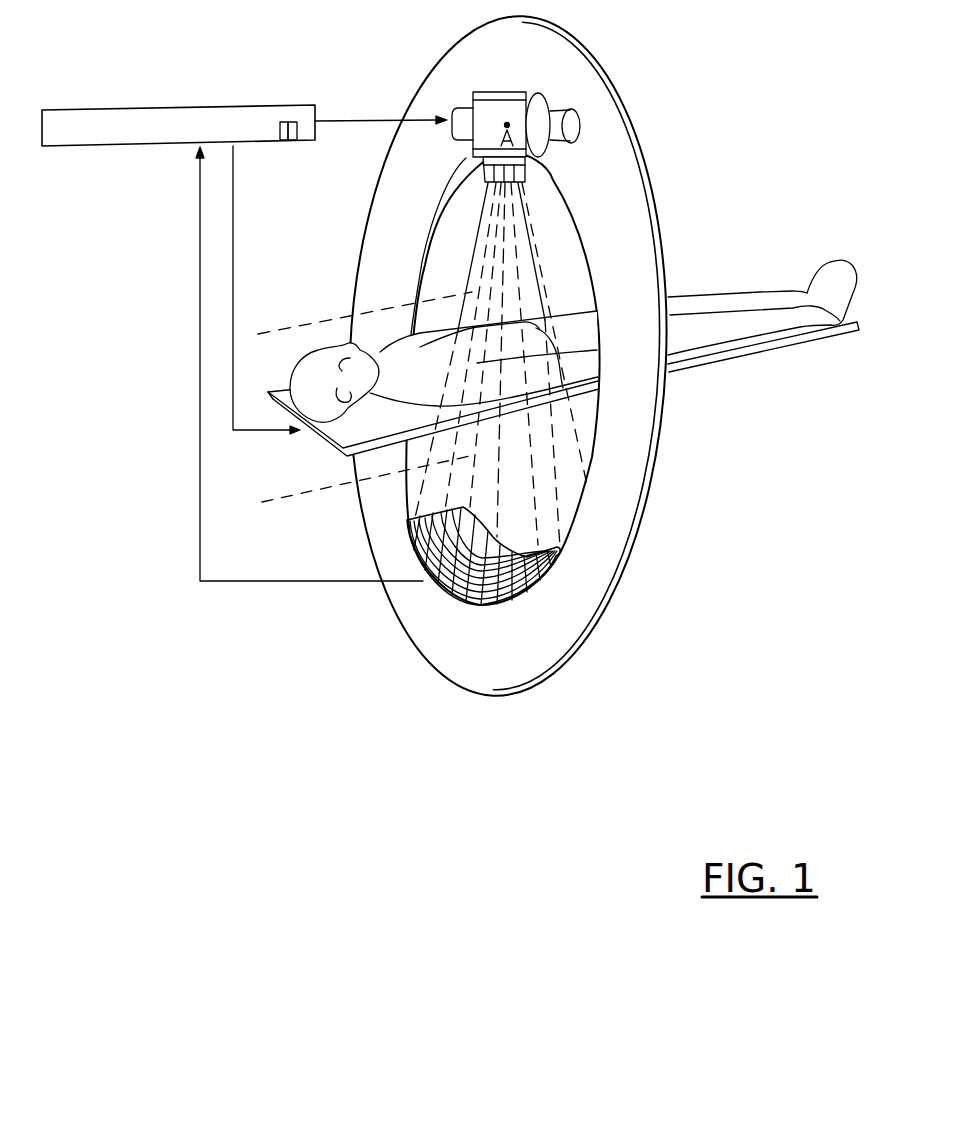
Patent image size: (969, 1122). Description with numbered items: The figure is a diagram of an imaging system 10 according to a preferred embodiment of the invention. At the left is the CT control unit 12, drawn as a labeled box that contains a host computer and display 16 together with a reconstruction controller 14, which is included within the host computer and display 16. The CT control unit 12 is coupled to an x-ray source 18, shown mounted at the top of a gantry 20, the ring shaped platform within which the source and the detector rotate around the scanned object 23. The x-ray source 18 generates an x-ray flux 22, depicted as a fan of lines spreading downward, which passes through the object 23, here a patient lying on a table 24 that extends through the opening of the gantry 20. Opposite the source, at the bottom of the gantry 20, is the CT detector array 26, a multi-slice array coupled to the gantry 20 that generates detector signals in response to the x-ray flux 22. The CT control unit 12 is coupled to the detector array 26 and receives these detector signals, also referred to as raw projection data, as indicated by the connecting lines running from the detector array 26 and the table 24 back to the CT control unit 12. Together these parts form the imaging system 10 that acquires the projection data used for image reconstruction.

The imaging system 10 is at (712, 73).
The CT control unit 12 is at (247, 107).
The reconstruction controller 14 is at (283, 140).
The host computer and display 16 is at (293, 140).
The x-ray source 18 is at (493, 92).
The gantry 20 is at (660, 228).
The x-ray flux 22 is at (470, 274).
The object 23 is at (730, 293).
The table 24 is at (697, 367).
The CT detector array 26 is at (453, 602).